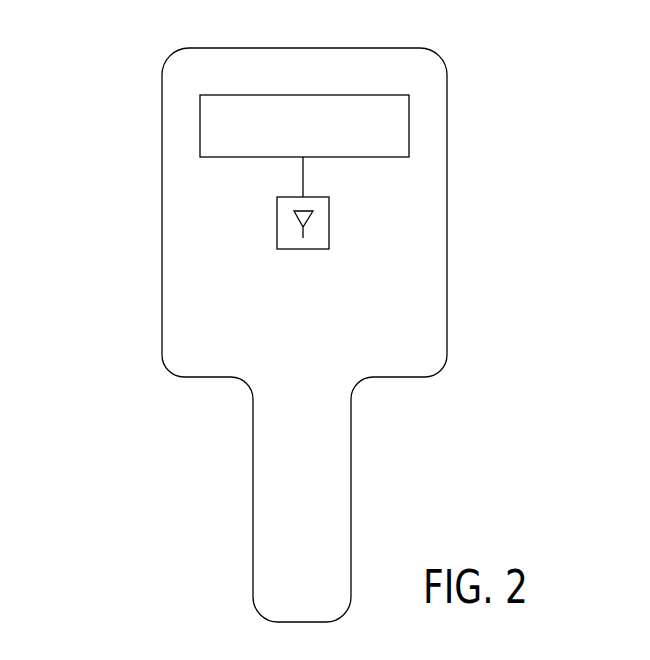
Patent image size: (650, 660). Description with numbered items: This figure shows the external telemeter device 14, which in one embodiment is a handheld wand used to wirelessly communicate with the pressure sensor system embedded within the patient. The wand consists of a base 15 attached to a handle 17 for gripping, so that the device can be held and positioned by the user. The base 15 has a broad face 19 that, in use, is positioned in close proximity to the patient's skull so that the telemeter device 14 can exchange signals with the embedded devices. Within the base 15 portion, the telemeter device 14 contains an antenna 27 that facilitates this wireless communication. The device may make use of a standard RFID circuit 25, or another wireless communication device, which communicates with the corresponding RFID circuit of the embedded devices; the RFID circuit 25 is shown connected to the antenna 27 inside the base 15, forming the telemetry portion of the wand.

The telemeter device 14 is at (275, 335).
The base 15 is at (176, 218).
The handle 17 is at (275, 494).
The broad face 19 is at (315, 328).
The RFID circuit 25 is at (409, 122).
The antenna 27 is at (329, 227).